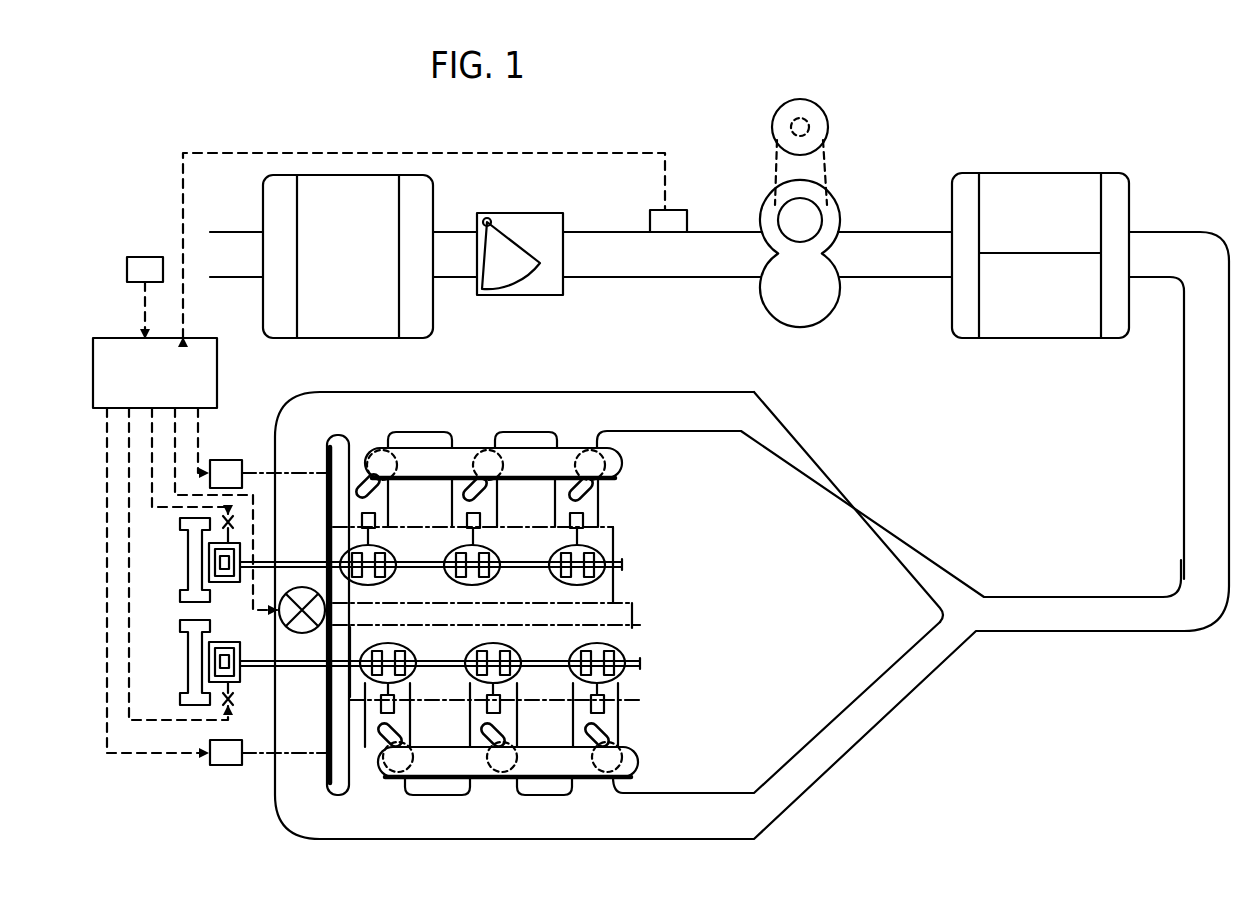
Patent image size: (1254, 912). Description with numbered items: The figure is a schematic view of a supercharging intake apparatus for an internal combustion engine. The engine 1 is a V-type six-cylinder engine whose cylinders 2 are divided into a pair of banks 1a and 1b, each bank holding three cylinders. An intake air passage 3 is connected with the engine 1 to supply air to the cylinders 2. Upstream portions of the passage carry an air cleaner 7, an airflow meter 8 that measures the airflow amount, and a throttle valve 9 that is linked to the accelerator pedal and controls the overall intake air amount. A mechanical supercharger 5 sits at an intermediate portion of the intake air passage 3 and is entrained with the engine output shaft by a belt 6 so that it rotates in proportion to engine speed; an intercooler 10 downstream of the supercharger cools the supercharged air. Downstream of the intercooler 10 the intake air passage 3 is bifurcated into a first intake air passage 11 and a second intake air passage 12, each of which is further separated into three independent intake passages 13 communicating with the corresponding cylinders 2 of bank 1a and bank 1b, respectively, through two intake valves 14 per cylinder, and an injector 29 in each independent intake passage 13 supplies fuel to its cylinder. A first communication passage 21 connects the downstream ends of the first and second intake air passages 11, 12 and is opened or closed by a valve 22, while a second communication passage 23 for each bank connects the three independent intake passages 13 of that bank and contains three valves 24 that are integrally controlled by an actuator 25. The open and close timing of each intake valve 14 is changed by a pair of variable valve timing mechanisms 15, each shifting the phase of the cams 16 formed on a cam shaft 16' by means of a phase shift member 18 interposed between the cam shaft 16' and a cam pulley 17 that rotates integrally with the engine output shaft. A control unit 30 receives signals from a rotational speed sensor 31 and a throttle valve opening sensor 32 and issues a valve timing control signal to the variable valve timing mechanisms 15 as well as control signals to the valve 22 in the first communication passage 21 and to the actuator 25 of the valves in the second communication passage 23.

The engine 1 is at (641, 604).
The bank 1a is at (615, 530).
The bank 1b is at (625, 672).
The cylinder 2 is at (626, 568).
The intake air passage 3 is at (1158, 229).
The mechanical supercharger 5 is at (840, 207).
The belt 6 is at (775, 152).
The air cleaner 7 is at (433, 200).
The airflow meter 8 is at (520, 213).
The throttle valve 9 is at (664, 256).
The intercooler 10 is at (1032, 338).
The first intake air passage 11 is at (838, 452).
The second intake air passage 12 is at (858, 748).
The independent intake passage 13 is at (595, 500).
The intake valve 14 is at (602, 540).
The variable valve timing mechanism 15 is at (179, 558).
The cam 16 is at (501, 633).
The cam shaft 16' is at (310, 620).
The cam pulley 17 is at (183, 534).
The phase shift member 18 is at (208, 551).
The first communication passage 21 is at (280, 405).
The valve 22 is at (283, 627).
The second communication passage 23 is at (540, 448).
The valve 24 is at (400, 452).
The actuator 25 is at (230, 460).
The injector 29 is at (600, 482).
The control unit 30 is at (110, 338).
The rotational speed sensor 31 is at (143, 257).
The throttle valve opening sensor 32 is at (672, 210).